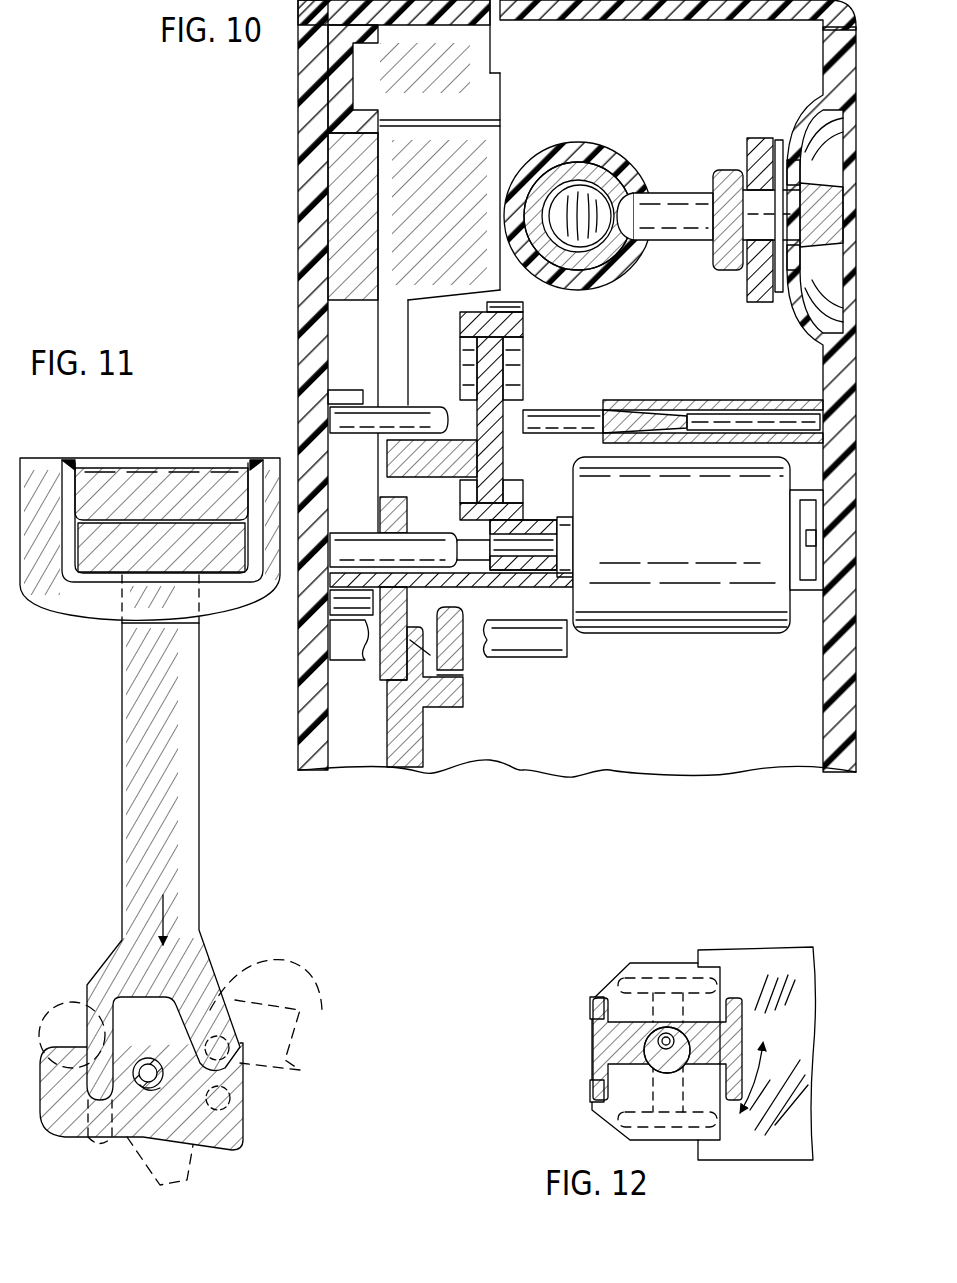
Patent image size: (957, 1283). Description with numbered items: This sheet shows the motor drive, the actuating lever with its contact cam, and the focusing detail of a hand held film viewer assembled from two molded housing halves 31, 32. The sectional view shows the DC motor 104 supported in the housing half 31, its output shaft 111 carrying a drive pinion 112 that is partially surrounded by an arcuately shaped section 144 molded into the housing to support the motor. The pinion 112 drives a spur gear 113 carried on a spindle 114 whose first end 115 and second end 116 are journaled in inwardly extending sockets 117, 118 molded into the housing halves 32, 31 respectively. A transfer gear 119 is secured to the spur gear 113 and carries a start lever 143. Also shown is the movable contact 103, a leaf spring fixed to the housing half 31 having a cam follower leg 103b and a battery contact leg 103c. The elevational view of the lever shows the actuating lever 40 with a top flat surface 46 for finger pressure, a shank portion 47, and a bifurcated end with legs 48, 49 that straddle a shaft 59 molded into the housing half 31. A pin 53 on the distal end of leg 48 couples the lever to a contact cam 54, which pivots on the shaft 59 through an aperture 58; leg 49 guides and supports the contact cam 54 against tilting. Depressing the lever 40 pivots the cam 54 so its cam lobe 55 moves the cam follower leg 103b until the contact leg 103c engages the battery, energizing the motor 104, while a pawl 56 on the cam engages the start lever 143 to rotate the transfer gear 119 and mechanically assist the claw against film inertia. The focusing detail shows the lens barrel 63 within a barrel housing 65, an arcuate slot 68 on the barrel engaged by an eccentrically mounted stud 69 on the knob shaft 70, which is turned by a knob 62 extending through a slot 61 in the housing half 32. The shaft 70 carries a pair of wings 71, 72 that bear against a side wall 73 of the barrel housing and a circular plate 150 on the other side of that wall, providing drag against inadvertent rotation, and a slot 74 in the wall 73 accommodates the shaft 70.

In FIG. 10, the molded housing half 31 is at (298, 307).
In FIG. 10, the molded housing half 32 is at (856, 433).
In FIG. 11, the actuating lever 40 is at (123, 437).
In FIG. 11, the top flat surface 46 is at (175, 458).
In FIG. 10, the shank portion 47 is at (393, 310).
In FIG. 11, the shank portion 47 is at (122, 750).
In FIG. 11, the leg 48 is at (212, 1015).
In FIG. 11, the leg 49 is at (88, 1020).
In FIG. 11, the pin 53 is at (227, 1073).
In FIG. 10, the contact cam 54 is at (390, 647).
In FIG. 11, the contact cam 54 is at (232, 1143).
In FIG. 10, the cam lobe 55 is at (397, 667).
In FIG. 11, the cam lobe 55 is at (50, 1103).
In FIG. 10, the pawl 56 is at (378, 516).
In FIG. 11, the pawl 56 is at (290, 1027).
In FIG. 11, the aperture 58 is at (150, 1065).
In FIG. 10, the shaft 59 is at (373, 603).
In FIG. 11, the shaft 59 is at (152, 1088).
In FIG. 10, the slot 61 is at (815, 117).
In FIG. 10, the knob 62 is at (833, 208).
In FIG. 10, the lens barrel 63 is at (552, 163).
In FIG. 12, the barrel housing 65 is at (782, 950).
In FIG. 10, the arcuate slot 68 is at (583, 146).
In FIG. 10, the eccentrically mounted stud 69 is at (626, 193).
In FIG. 12, the eccentrically mounted stud 69 is at (667, 1037).
In FIG. 10, the knob shaft 70 is at (670, 195).
In FIG. 12, the knob shaft 70 is at (670, 1070).
In FIG. 12, the wing 71 is at (742, 1043).
In FIG. 10, the wing 72 is at (722, 180).
In FIG. 12, the wing 72 is at (598, 1047).
In FIG. 10, the side wall 73 is at (758, 140).
In FIG. 12, the side wall 73 is at (672, 963).
In FIG. 12, the slot 74 is at (622, 1025).
In FIG. 10, the movable contact 103 is at (468, 711).
In FIG. 10, the cam follower leg 103b is at (417, 647).
In FIG. 10, the battery contact leg 103c is at (453, 627).
In FIG. 10, the DC motor 104 is at (680, 640).
In FIG. 10, the output shaft 111 is at (490, 540).
In FIG. 10, the drive pinion 112 is at (560, 520).
In FIG. 10, the spur gear 113 is at (523, 308).
In FIG. 10, the spindle 114 is at (563, 410).
In FIG. 10, the first end 115 is at (668, 412).
In FIG. 10, the second end 116 is at (330, 400).
In FIG. 10, the socket 117 is at (632, 408).
In FIG. 10, the socket 118 is at (350, 392).
In FIG. 10, the transfer gear 119 is at (460, 325).
In FIG. 10, the start lever 143 is at (395, 465).
In FIG. 10, the arcuately shaped section 144 is at (470, 580).
In FIG. 10, the circular plate 150 is at (780, 140).